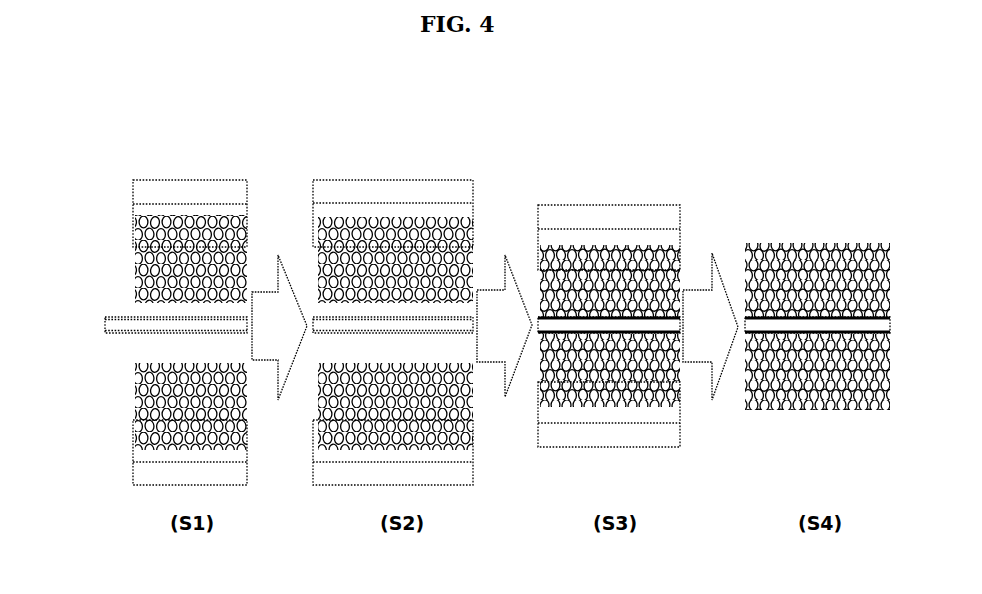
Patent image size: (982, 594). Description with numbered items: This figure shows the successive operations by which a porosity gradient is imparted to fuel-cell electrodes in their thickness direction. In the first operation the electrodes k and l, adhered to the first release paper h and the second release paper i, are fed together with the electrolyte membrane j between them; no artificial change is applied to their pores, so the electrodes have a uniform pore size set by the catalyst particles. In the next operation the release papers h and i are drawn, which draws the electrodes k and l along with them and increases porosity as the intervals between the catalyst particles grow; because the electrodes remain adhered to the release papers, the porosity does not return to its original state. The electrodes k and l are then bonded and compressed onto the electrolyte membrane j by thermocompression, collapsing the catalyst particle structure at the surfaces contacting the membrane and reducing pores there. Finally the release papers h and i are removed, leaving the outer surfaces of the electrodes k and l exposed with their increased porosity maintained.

The first release paper h is at (132, 188).
The cathode electrode k is at (132, 265).
The electrolyte membrane j is at (105, 328).
The anode electrode l is at (138, 397).
The second release paper i is at (138, 485).